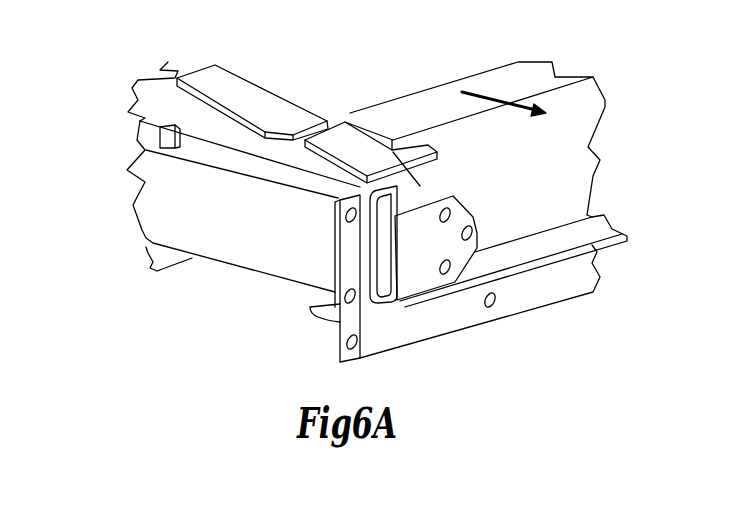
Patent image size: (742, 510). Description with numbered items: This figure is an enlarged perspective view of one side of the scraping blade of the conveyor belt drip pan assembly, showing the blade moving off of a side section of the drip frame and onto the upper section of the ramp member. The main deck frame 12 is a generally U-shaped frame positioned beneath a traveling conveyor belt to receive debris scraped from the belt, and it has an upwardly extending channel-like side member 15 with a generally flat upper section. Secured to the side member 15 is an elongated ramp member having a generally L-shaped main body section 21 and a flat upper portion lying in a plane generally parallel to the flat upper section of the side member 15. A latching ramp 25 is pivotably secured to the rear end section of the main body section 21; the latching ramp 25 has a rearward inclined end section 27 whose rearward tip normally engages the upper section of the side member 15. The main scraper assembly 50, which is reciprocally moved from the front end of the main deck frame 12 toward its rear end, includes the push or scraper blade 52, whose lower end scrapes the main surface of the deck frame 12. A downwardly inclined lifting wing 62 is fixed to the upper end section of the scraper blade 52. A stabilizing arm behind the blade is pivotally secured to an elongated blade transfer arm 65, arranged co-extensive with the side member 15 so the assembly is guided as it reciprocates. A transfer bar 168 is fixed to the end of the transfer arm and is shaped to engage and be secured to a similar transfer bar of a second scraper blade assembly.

The main deck frame 12 is at (585, 232).
The side member 15 is at (230, 237).
The main body section 21 is at (165, 139).
The latching ramp 25 is at (197, 115).
The rearward inclined end section 27 is at (247, 97).
The main scraper assembly 50 is at (565, 159).
The scraper blade 52 is at (568, 178).
The lifting wing 62 is at (345, 142).
The blade transfer arm 65 is at (400, 195).
The transfer bar 168 is at (447, 233).